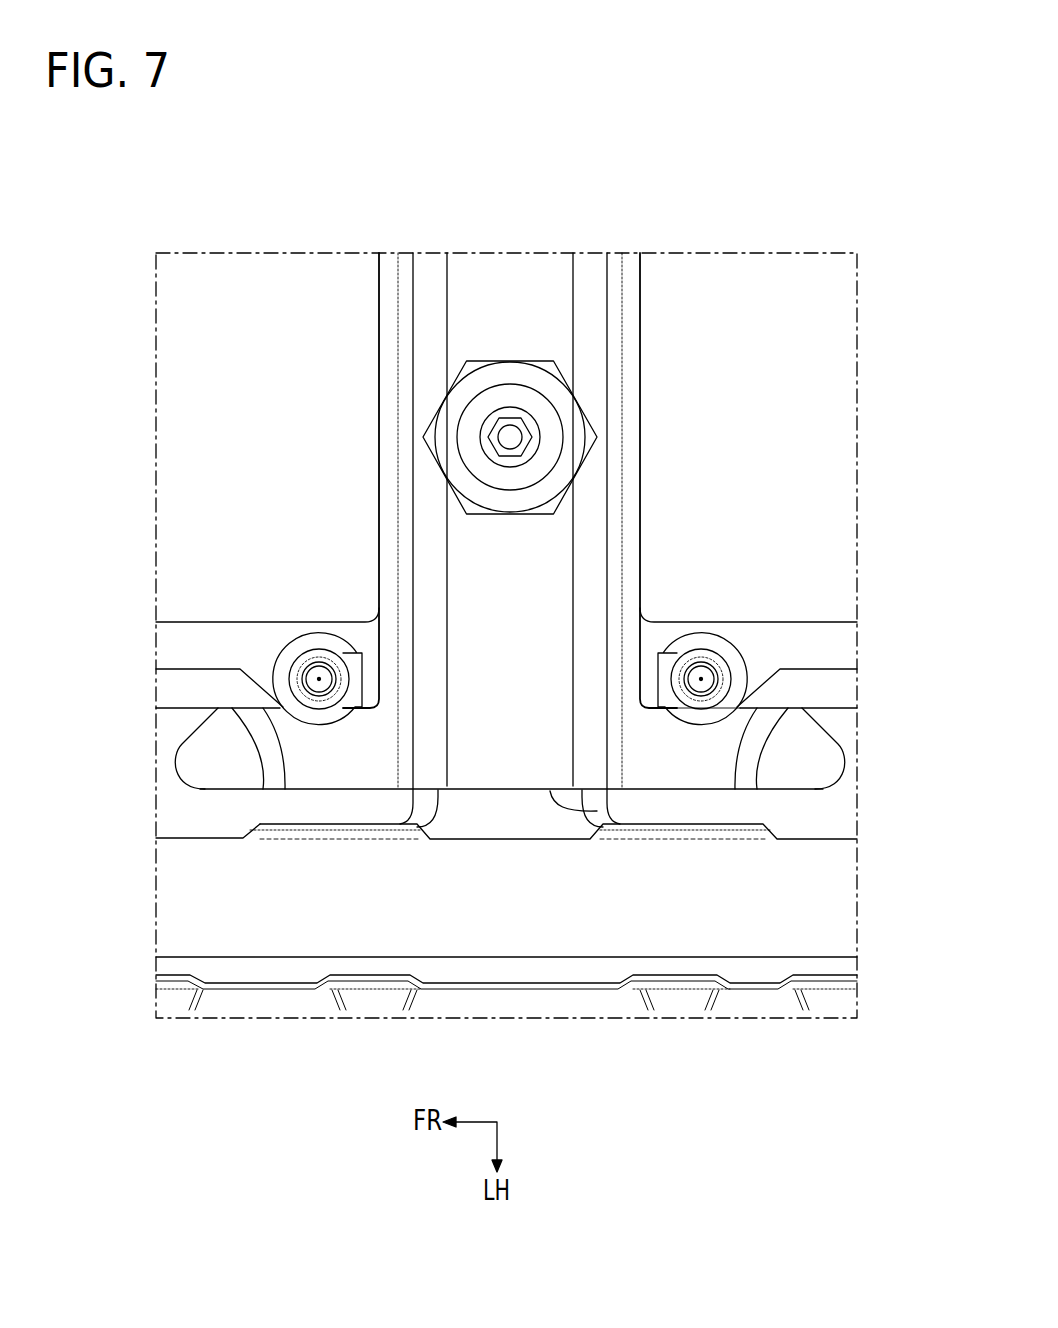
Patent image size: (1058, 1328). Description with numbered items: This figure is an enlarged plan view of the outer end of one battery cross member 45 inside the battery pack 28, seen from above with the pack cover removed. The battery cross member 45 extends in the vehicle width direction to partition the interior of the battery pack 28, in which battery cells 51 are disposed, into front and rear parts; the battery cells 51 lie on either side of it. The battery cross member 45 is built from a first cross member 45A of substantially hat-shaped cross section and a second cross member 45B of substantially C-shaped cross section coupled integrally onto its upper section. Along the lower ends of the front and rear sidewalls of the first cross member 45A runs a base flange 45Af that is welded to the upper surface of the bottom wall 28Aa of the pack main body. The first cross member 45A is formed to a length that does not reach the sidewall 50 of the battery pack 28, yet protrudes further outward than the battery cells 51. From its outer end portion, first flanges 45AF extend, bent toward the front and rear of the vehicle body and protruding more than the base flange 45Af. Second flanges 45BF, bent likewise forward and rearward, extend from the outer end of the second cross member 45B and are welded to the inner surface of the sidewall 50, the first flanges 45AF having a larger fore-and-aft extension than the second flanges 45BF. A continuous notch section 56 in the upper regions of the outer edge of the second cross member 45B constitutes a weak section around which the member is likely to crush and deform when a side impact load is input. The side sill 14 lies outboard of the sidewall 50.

The side sill 14 is at (599, 1010).
The battery pack 28 is at (852, 873).
The bottom wall 28Aa is at (195, 798).
The battery cross member 45 is at (372, 321).
The first cross member 45A is at (642, 312).
The base flange 45Af is at (379, 412).
The first flange 45AF is at (207, 743).
The second cross member 45B is at (525, 275).
The second flange 45BF is at (303, 823).
The sidewall 50 is at (720, 820).
The battery cell 51 is at (175, 345).
The notch section 56 is at (600, 810).